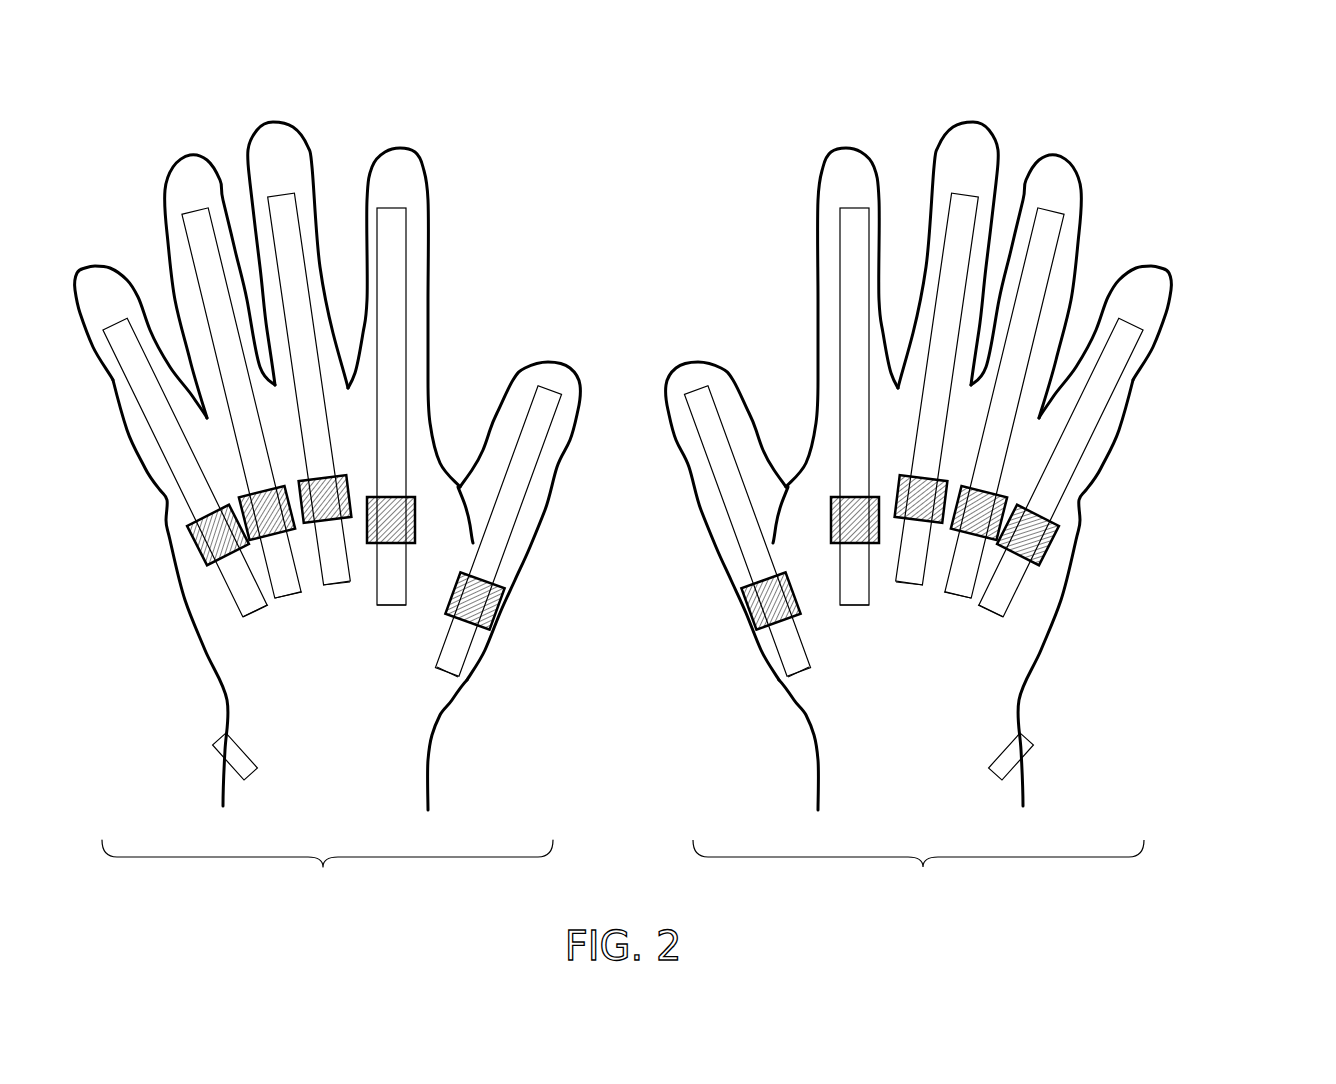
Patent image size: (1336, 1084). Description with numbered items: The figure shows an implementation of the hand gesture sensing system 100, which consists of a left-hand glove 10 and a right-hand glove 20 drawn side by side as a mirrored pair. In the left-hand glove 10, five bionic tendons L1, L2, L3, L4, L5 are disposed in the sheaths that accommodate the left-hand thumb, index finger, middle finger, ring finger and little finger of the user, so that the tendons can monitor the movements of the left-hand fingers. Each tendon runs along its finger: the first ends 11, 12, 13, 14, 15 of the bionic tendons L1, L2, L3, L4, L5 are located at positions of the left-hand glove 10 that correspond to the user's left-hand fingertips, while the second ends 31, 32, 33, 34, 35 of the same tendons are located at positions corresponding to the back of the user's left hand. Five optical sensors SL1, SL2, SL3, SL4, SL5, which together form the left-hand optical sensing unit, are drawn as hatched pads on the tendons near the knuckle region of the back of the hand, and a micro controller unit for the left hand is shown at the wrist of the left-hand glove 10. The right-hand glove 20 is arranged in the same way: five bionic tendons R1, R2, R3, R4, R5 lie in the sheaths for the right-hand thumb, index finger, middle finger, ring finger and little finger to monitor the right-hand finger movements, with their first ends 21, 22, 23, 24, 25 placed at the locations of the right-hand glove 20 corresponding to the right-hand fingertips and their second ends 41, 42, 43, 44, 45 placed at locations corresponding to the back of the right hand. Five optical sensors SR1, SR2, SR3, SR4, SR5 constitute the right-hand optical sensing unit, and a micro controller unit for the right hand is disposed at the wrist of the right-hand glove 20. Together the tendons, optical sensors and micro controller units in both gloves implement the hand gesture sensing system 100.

The hand gesture sensing system 100 is at (1218, 117).
The left-hand glove 10 is at (326, 515).
The right-hand glove 20 is at (920, 515).
The first end of bionic tendon L1 11 is at (553, 392).
The first end of bionic tendon L2 12 is at (392, 208).
The first end of bionic tendon L3 13 is at (281, 196).
The first end of bionic tendon L4 14 is at (195, 212).
The first end of bionic tendon L5 15 is at (115, 326).
The first end of bionic tendon R1 21 is at (693, 388).
The first end of bionic tendon R2 22 is at (851, 208).
The first end of bionic tendon R3 23 is at (965, 196).
The first end of bionic tendon R4 24 is at (1051, 212).
The first end of bionic tendon R5 25 is at (1131, 326).
The bionic tendon L1 is at (525, 487).
The bionic tendon L2 is at (400, 342).
The bionic tendon L3 is at (302, 337).
The bionic tendon L4 is at (230, 360).
The bionic tendon L5 is at (165, 443).
The bionic tendon R1 is at (721, 487).
The bionic tendon R2 is at (846, 342).
The bionic tendon R3 is at (944, 337).
The bionic tendon R4 is at (1016, 360).
The bionic tendon R5 is at (1081, 443).
The optical sensor SL1 is at (503, 615).
The optical sensor SL2 is at (416, 527).
The optical sensor SL3 is at (337, 477).
The optical sensor SL4 is at (255, 490).
The optical sensor SL5 is at (207, 553).
The optical sensor SR1 is at (743, 615).
The optical sensor SR2 is at (830, 527).
The optical sensor SR3 is at (909, 477).
The optical sensor SR4 is at (991, 490).
The optical sensor SR5 is at (1039, 553).
The second end of bionic tendon L1 31 is at (445, 680).
The second end of bionic tendon L2 32 is at (392, 606).
The second end of bionic tendon L3 33 is at (338, 584).
The second end of bionic tendon L4 34 is at (292, 596).
The second end of bionic tendon L5 35 is at (257, 615).
The second end of bionic tendon R1 41 is at (801, 680).
The second end of bionic tendon R2 42 is at (854, 606).
The second end of bionic tendon R3 43 is at (908, 584).
The second end of bionic tendon R4 44 is at (954, 596).
The second end of bionic tendon R5 45 is at (989, 615).